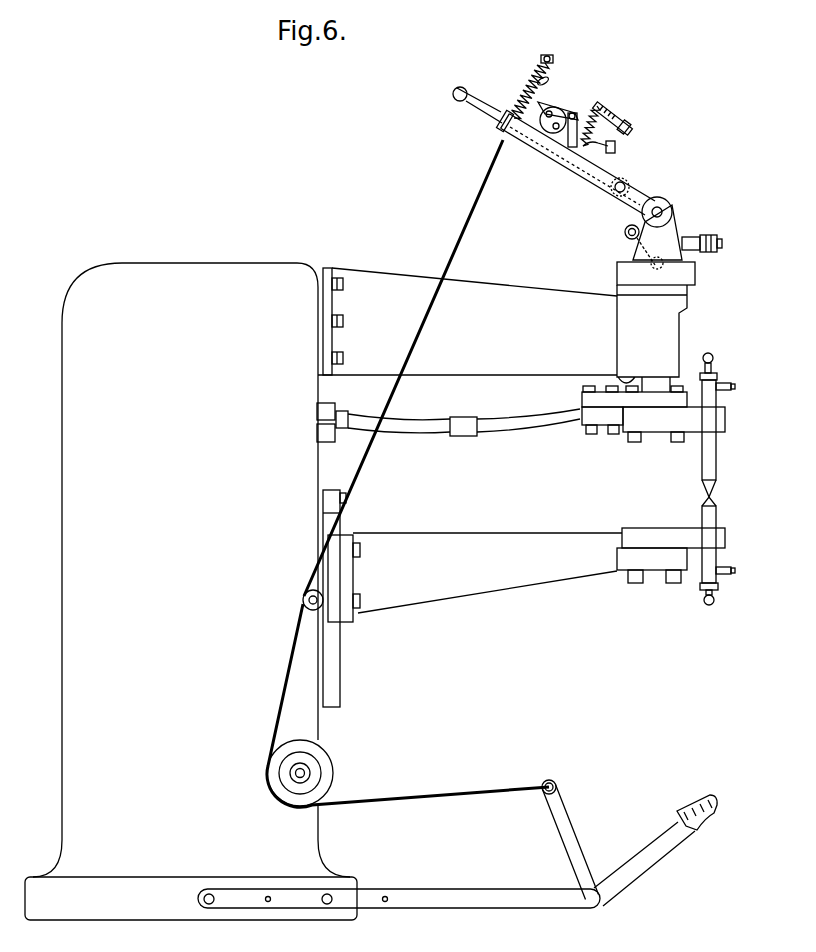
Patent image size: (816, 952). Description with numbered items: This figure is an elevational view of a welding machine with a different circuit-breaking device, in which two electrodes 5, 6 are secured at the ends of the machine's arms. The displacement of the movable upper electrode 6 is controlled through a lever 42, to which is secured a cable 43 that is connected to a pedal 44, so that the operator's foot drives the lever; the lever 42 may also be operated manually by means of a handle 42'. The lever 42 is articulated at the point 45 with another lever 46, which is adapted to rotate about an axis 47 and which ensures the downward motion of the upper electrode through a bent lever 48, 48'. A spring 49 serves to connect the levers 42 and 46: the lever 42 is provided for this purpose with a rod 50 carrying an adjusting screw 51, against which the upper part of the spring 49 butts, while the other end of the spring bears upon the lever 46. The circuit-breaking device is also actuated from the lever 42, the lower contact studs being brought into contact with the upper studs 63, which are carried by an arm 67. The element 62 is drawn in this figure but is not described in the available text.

The electrode 5 is at (704, 516).
The movable electrode 6 is at (700, 462).
The lever 42 is at (578, 164).
The handle 42' is at (483, 99).
The cable 43 is at (432, 794).
The pedal 44 is at (677, 820).
The articulation 45 is at (622, 181).
The lever 46 is at (641, 195).
The axis 47 is at (673, 207).
The bent lever 48 is at (615, 228).
The bent lever 48' is at (627, 253).
The spring 49 is at (546, 82).
The rod 50 is at (537, 78).
The adjusting screw 51 is at (553, 61).
The contact bracket 62 is at (615, 148).
The upper studs 63 is at (631, 130).
The arm 67 is at (606, 116).